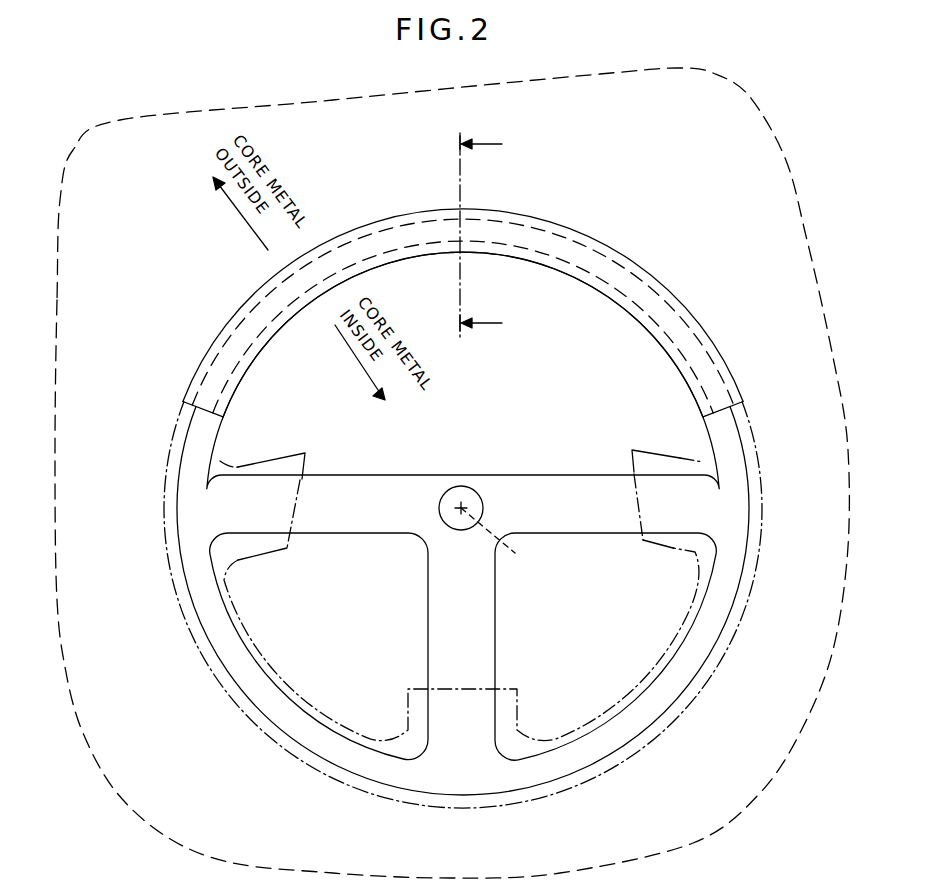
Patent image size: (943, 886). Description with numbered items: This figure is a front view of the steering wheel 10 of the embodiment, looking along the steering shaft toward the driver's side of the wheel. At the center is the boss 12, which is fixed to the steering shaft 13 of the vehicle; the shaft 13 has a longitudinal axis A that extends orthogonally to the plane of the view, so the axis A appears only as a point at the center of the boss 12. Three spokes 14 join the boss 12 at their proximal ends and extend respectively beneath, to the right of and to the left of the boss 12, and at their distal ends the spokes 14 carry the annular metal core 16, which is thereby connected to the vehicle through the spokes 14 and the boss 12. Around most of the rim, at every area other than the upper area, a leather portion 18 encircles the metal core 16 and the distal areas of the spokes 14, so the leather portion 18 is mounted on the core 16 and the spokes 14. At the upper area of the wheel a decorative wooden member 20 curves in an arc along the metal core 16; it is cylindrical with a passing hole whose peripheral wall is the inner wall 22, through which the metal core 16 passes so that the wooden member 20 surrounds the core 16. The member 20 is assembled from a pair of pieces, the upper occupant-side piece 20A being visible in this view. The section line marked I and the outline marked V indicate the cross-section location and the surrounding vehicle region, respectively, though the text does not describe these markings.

The steering wheel 10 is at (648, 149).
The boss 12 is at (478, 476).
The steering shaft 13 is at (445, 492).
The spokes 14 is at (345, 478).
The metal core 16 is at (693, 347).
The leather portion 18 is at (660, 733).
The wooden member 20 is at (371, 224).
The piece 20A is at (560, 227).
The inner wall 22 is at (633, 273).
The longitudinal axis A is at (495, 540).
The vehicle V is at (105, 312).
The section line I is at (485, 235).